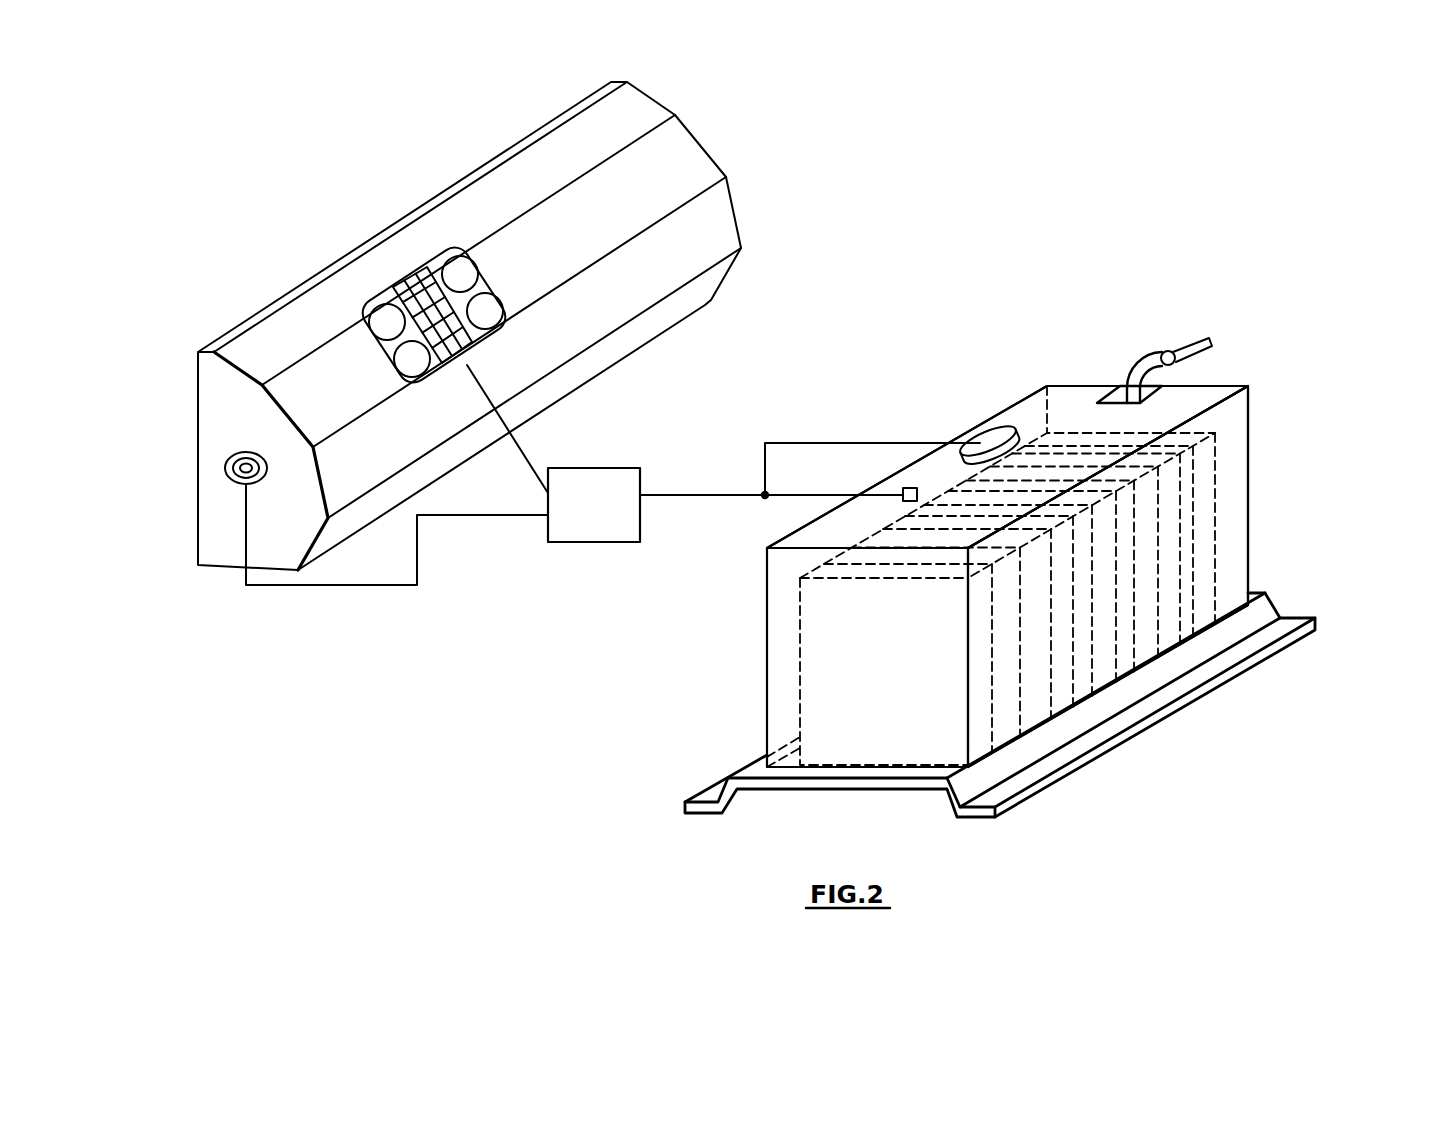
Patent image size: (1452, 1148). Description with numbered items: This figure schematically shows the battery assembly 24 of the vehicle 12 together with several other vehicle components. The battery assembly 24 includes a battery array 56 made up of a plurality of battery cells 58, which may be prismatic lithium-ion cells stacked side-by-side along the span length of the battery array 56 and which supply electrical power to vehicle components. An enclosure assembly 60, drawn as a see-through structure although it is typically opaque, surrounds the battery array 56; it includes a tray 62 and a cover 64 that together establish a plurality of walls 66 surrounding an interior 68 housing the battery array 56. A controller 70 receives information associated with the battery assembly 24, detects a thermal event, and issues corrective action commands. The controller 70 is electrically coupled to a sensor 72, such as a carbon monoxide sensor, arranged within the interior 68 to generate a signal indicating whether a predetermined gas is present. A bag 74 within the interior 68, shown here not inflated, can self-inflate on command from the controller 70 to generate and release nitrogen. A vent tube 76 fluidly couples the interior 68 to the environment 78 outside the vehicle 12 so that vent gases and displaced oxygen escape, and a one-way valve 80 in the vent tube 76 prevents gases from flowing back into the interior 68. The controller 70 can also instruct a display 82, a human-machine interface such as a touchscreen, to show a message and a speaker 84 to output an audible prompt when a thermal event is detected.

The vehicle 12 is at (1254, 204).
The battery assembly 24 is at (1328, 463).
The battery array 56 is at (1225, 463).
The battery cells 58 is at (1210, 532).
The enclosure assembly 60 is at (1264, 563).
The tray 62 is at (1215, 665).
The cover 64 is at (1240, 475).
The walls 66 is at (1226, 386).
The interior 68 is at (1037, 410).
The controller 70 is at (580, 520).
The sensor 72 is at (902, 497).
The bag 74 is at (988, 432).
The vent tube 76 is at (1142, 373).
The environment 78 is at (1243, 319).
The one-way valve 80 is at (1167, 351).
The display 82 is at (426, 258).
The speaker 84 is at (226, 463).